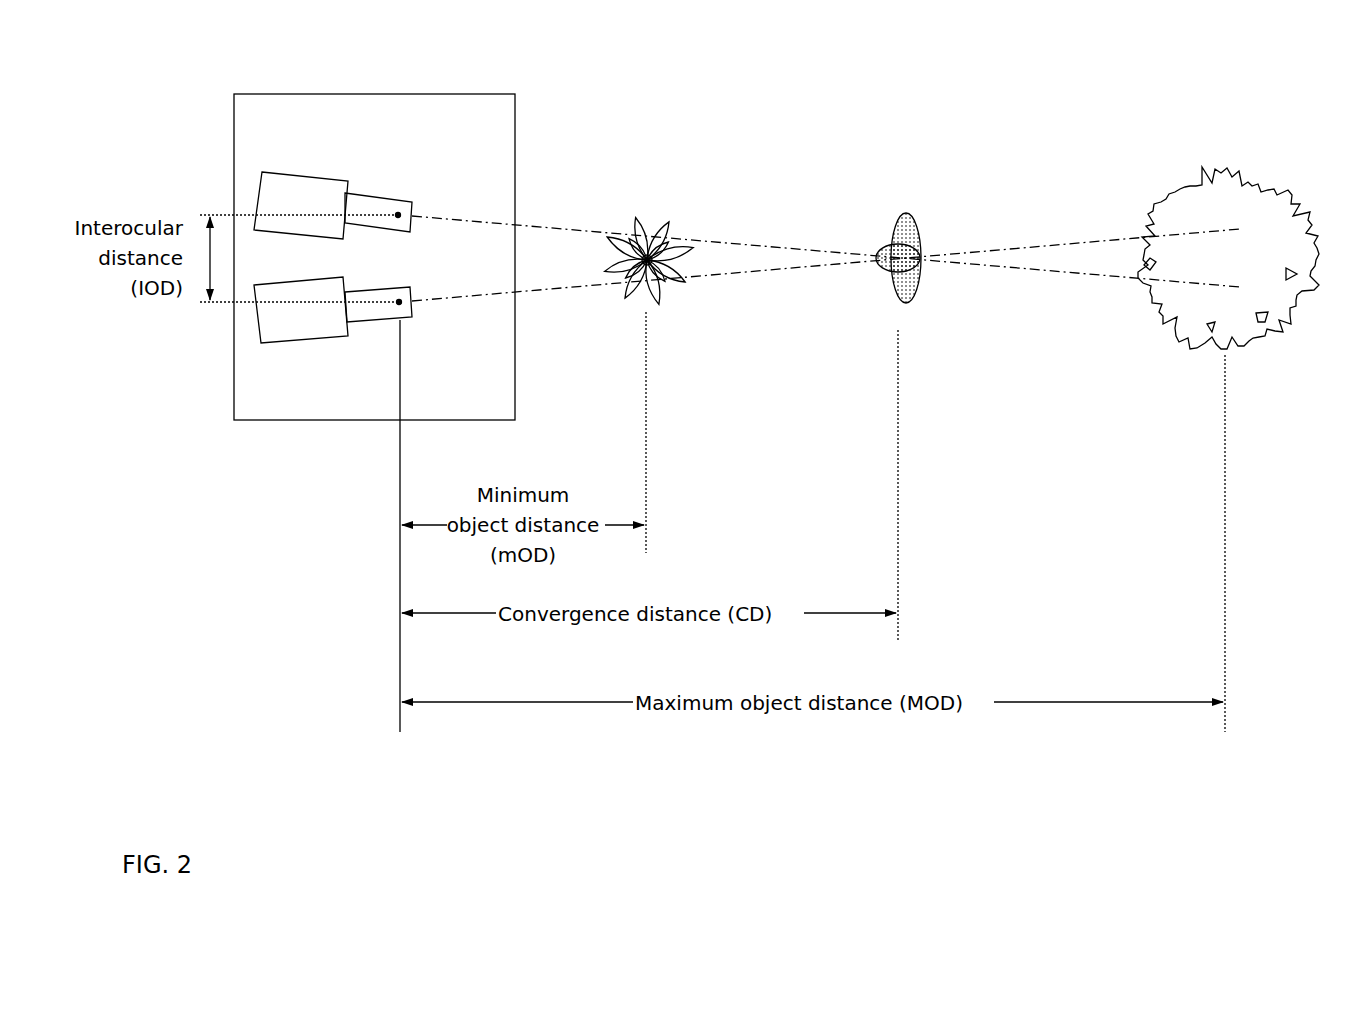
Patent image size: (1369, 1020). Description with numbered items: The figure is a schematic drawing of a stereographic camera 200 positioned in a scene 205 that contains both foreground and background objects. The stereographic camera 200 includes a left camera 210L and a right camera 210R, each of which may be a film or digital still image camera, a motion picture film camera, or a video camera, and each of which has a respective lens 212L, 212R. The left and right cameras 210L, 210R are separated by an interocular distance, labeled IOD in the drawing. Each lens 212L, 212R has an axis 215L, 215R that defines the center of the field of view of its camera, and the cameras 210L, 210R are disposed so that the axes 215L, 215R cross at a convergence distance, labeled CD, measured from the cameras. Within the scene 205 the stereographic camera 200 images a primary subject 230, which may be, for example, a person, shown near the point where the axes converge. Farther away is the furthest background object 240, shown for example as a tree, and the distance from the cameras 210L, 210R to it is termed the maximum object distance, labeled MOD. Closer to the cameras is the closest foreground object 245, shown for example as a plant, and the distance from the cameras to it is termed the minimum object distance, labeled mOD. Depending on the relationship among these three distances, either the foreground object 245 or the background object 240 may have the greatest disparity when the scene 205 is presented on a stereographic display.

The stereographic camera 200 is at (374, 257).
The scene 205 is at (583, 48).
The left camera 210L is at (293, 186).
The right camera 210R is at (327, 340).
The lens 212L is at (378, 195).
The lens 212R is at (410, 318).
The axis 215L is at (977, 270).
The axis 215R is at (970, 245).
The primary subject 230 is at (905, 213).
The background object 240 is at (1237, 170).
The foreground object 245 is at (660, 215).